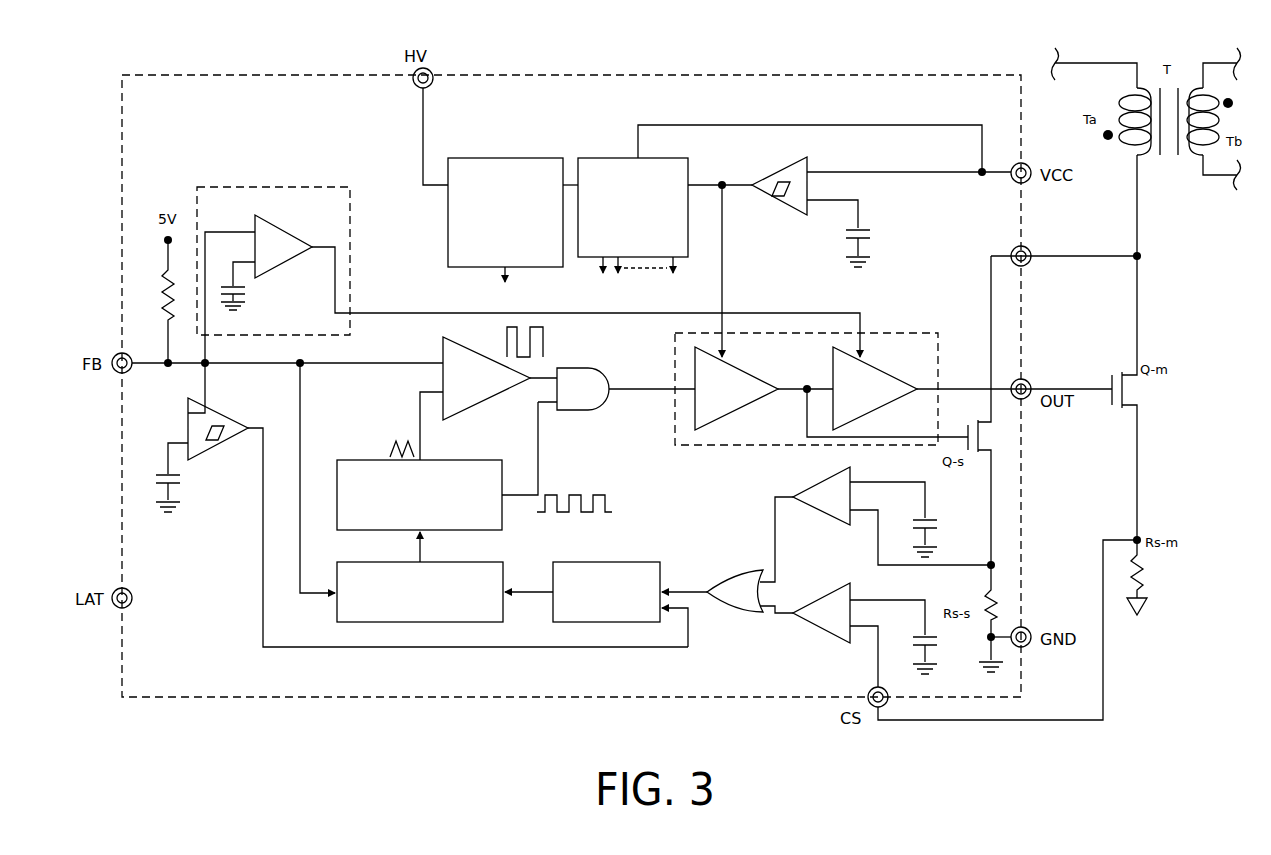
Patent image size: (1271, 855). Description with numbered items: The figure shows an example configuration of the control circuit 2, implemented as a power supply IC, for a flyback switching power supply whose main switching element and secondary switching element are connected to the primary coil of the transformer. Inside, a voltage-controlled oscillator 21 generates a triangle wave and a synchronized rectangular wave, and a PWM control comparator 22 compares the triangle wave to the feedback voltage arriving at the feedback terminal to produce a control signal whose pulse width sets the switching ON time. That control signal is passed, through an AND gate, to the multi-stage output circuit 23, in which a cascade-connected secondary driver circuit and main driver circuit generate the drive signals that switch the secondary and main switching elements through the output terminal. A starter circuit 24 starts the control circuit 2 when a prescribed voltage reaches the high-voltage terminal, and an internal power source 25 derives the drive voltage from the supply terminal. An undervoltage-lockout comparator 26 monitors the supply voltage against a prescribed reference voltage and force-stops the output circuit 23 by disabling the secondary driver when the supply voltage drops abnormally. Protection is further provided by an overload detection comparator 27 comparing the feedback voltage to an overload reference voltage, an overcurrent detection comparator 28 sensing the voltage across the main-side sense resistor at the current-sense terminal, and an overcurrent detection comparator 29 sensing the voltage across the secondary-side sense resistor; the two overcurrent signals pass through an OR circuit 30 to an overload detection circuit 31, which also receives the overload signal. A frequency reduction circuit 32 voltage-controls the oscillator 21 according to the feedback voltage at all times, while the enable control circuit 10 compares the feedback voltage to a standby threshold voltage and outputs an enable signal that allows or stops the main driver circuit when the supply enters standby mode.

The control circuit 2 is at (517, 113).
The enable control circuit 10 is at (292, 186).
The voltage-controlled oscillator 21 is at (350, 460).
The PWM control comparator 22 is at (440, 352).
The multi-stage output circuit 23 is at (734, 432).
The starter circuit 24 is at (538, 158).
The internal power source 25 is at (612, 158).
The UVLO comparator 26 is at (810, 161).
The overload detection comparator 27 is at (226, 420).
The overcurrent detection comparator 28 is at (852, 587).
The overcurrent detection comparator 29 is at (852, 471).
The OR circuit 30 is at (750, 573).
The overload detection circuit 31 is at (615, 562).
The frequency reduction circuit 32 is at (490, 562).